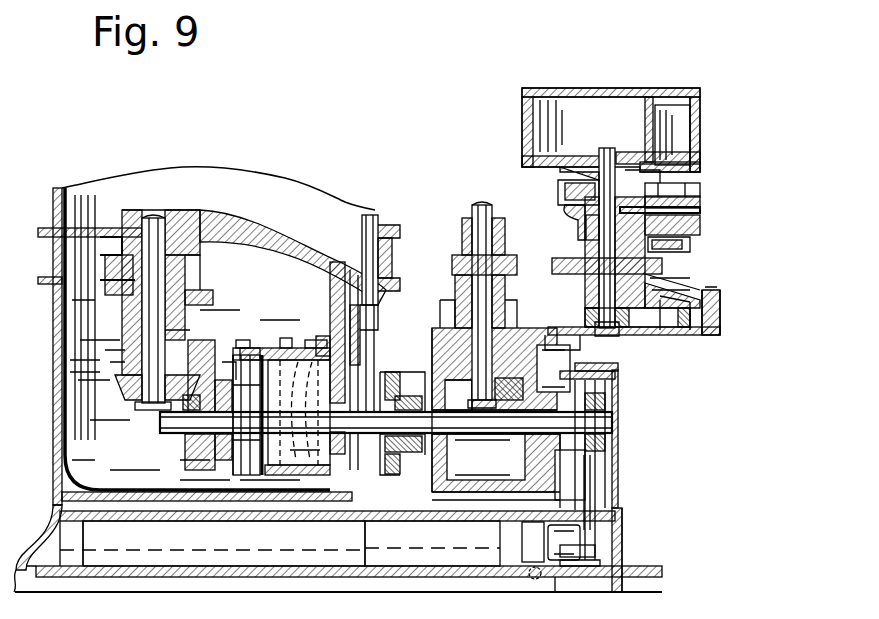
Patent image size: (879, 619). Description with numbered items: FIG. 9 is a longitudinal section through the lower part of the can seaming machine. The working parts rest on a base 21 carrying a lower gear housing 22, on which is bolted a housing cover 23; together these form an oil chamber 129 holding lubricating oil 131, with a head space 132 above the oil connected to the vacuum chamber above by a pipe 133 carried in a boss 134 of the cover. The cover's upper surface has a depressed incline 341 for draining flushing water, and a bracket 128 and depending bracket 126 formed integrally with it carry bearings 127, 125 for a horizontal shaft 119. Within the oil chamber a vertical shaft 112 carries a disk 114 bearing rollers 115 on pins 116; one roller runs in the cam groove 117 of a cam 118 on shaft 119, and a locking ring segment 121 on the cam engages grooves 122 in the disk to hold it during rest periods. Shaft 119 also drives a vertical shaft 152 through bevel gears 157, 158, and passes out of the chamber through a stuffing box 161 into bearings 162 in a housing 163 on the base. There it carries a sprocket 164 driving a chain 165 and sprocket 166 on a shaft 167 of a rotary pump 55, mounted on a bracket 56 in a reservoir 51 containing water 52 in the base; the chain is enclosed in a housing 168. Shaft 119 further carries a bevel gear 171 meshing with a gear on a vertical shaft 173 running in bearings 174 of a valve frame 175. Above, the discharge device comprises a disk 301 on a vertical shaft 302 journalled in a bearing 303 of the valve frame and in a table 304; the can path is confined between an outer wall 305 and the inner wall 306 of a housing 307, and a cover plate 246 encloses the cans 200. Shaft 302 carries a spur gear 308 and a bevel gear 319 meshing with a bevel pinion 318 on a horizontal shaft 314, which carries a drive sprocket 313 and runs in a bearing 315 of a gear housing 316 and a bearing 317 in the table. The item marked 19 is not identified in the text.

The bearing retainer 19 is at (224, 368).
The base 21 is at (622, 537).
The lower gear housing 22 is at (55, 326).
The housing cover 23 is at (247, 227).
The reservoir 51 is at (98, 562).
The water 52 is at (430, 567).
The rotary pump 55 is at (530, 555).
The bracket 56 is at (564, 548).
The vertical shaft 112 is at (545, 376).
The disk 114 is at (332, 348).
The rollers 115 is at (262, 380).
The pins 116 is at (330, 348).
The cam groove 117 is at (250, 425).
The cam 118 is at (309, 445).
The horizontal shaft 119 is at (612, 425).
The locking ring segment 121 is at (275, 348).
The grooves 122 is at (283, 345).
The bearing 125 is at (381, 366).
The depending bracket 126 is at (378, 322).
The bearing 127 is at (218, 448).
The bracket 128 is at (222, 230).
The oil chamber 129 is at (68, 368).
The lubricating oil 131 is at (80, 437).
The head space 132 is at (58, 254).
The pipe 133 is at (366, 213).
The boss 134 is at (380, 262).
The vertical shaft 152 is at (150, 330).
The bevel gear 157 is at (125, 398).
The bevel gear 158 is at (205, 462).
The stuffing box 161 is at (410, 455).
The bearings 162 is at (440, 440).
The housing 163 is at (530, 485).
The sprocket 164 is at (612, 408).
The chain 165 is at (598, 500).
The sprocket 166 is at (600, 558).
The shaft 167 is at (590, 578).
The housing 168 is at (606, 455).
The bevel gear 171 is at (617, 392).
The vertical shaft 173 is at (474, 213).
The bearings 174 is at (452, 275).
The valve frame 175 is at (690, 290).
The cans 200 is at (700, 112).
The cover plate 246 is at (618, 88).
The disk 301 is at (555, 178).
The vertical shaft 302 is at (604, 148).
The bearing 303 is at (662, 282).
The table 304 is at (578, 214).
The outer wall 305 is at (702, 116).
The inner wall 306 is at (648, 98).
The housing 307 is at (522, 112).
The spur gear 308 is at (722, 305).
The drive sprocket 313 is at (700, 200).
The horizontal shaft 314 is at (700, 211).
The bearing 315 is at (700, 226).
The gear housing 316 is at (690, 182).
The bearing 317 is at (605, 220).
The bevel pinion 318 is at (703, 157).
The bevel gear 319 is at (560, 190).
The depressed incline 341 is at (288, 234).